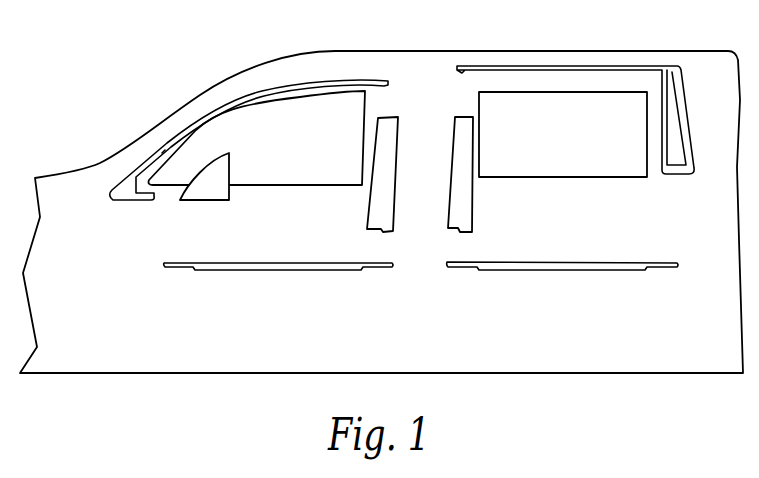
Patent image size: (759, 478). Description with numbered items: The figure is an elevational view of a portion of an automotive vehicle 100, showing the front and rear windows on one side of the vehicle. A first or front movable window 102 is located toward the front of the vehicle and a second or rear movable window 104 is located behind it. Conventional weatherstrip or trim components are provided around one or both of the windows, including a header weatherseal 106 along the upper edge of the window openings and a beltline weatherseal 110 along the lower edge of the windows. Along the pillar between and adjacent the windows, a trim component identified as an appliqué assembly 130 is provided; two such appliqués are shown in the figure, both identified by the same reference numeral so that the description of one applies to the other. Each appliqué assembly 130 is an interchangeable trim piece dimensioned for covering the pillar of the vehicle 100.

The automotive vehicle 100 is at (540, 362).
The front movable window 102 is at (243, 123).
The rear movable window 104 is at (580, 113).
The header weatherseal 106 is at (353, 78).
The beltline weatherseal 110 is at (270, 268).
The appliqué assembly 130 is at (466, 147).